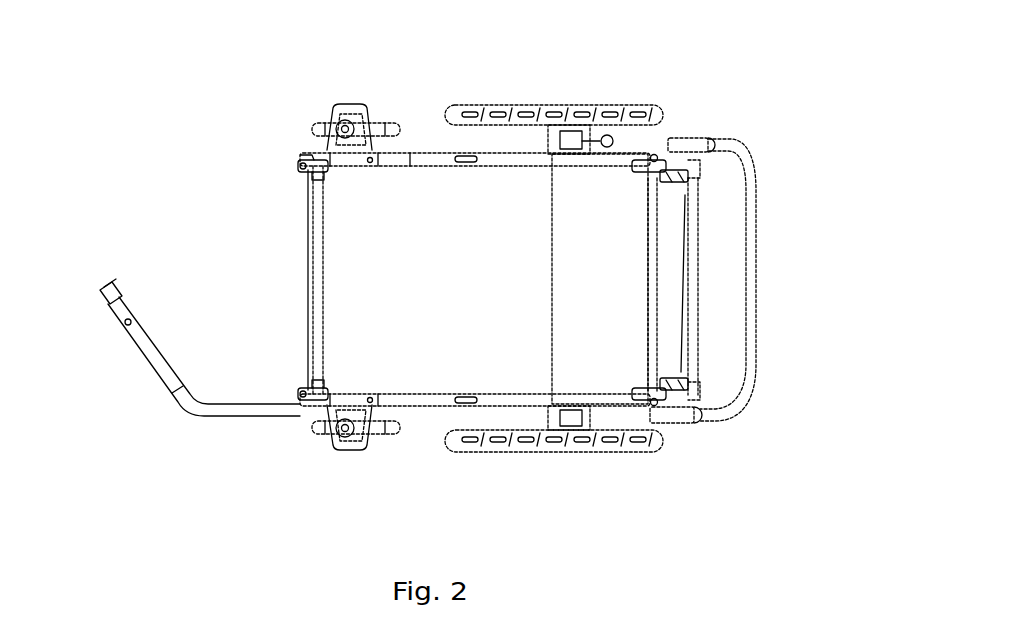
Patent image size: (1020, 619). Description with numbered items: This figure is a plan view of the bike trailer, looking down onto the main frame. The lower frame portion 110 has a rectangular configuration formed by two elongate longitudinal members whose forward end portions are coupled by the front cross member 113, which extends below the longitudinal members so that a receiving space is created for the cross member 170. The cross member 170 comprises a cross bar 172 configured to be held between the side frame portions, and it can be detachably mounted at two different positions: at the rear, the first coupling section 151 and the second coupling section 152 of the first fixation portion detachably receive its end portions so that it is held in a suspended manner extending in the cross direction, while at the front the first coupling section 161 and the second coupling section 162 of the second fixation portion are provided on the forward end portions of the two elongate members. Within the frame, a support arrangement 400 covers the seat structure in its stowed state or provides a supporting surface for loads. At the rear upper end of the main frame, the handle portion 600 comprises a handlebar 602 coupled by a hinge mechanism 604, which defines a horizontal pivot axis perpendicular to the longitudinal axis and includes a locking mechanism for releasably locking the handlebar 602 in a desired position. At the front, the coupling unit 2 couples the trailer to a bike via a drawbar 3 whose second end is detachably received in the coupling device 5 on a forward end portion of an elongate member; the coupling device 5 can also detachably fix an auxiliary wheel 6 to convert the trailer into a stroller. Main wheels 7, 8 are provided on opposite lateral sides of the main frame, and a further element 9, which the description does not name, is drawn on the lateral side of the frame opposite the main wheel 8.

The coupling unit 2 is at (191, 386).
The drawbar 3 is at (181, 400).
The coupling device 5 is at (337, 110).
The auxiliary wheel 6 is at (379, 447).
The main wheel 7 is at (375, 110).
The main wheel 8 is at (574, 456).
The upper grip handle 9 is at (511, 104).
The lower frame portion 110 is at (417, 412).
The front cross member 113 is at (312, 210).
The first coupling section 151 is at (663, 372).
The second coupling section 152 is at (652, 136).
The first coupling section 161 is at (302, 387).
The second coupling section 162 is at (296, 171).
The cross member 170 is at (332, 281).
The cross bar 172 is at (318, 258).
The support arrangement 400 is at (574, 298).
The handle portion 600 is at (766, 269).
The handlebar 602 is at (750, 246).
The hinge mechanism 604 is at (668, 134).